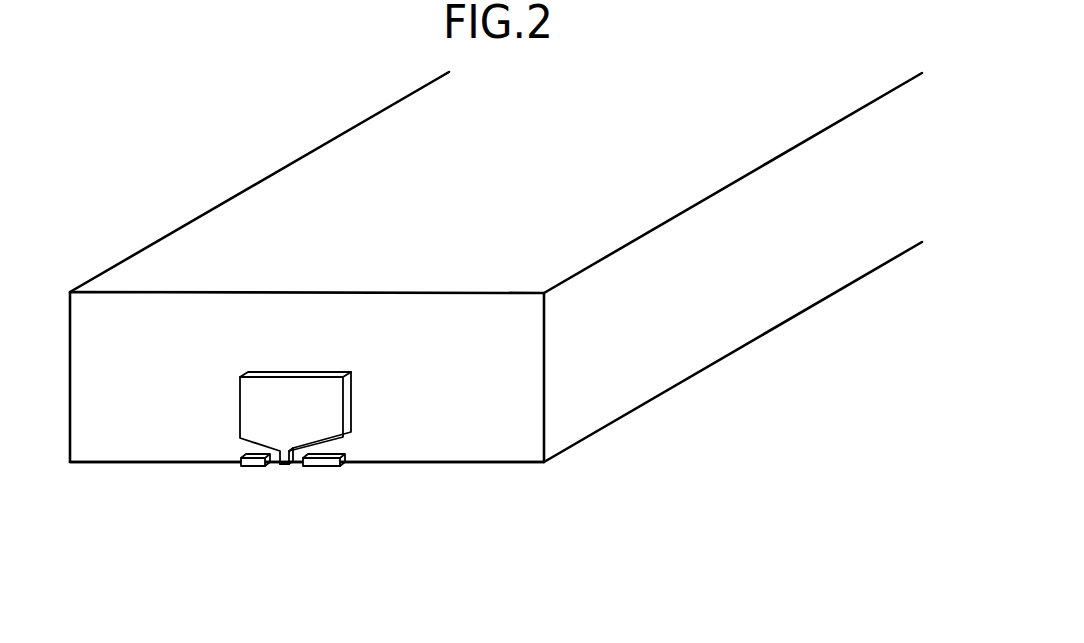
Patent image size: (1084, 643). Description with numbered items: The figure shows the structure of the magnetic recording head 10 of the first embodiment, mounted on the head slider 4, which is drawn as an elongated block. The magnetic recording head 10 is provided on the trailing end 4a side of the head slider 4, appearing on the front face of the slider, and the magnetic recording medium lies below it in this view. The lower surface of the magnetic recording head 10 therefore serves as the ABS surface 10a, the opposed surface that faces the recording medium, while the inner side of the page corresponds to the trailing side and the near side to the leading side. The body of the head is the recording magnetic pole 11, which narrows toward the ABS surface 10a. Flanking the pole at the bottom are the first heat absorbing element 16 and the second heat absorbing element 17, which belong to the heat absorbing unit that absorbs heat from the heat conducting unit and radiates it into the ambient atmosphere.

The head slider 4 is at (673, 360).
The trailing end 4a is at (472, 434).
The magnetic recording head 10 is at (255, 566).
The ABS surface 10a is at (287, 476).
The recording magnetic pole 11 is at (330, 407).
The first heat absorbing element 16 is at (325, 468).
The second heat absorbing element 17 is at (255, 468).